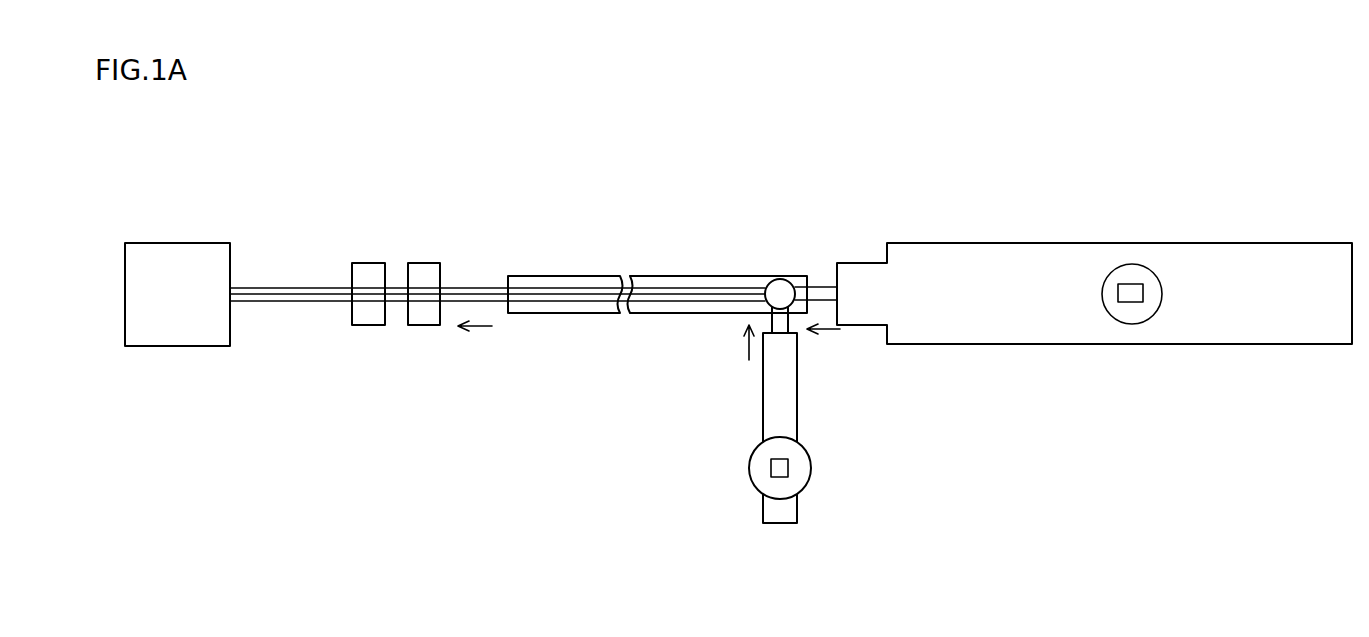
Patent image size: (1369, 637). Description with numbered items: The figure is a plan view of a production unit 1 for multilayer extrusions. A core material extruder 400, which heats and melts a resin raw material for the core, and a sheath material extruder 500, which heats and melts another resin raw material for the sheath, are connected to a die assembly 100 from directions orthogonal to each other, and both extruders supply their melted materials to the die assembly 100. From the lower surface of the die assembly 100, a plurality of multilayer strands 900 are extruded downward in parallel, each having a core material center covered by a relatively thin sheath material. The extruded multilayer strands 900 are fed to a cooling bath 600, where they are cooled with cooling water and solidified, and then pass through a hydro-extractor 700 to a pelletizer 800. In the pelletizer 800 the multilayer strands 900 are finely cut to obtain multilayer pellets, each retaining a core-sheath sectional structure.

The production unit 1 is at (738, 370).
The die assembly 100 is at (780, 286).
The core material extruder 400 is at (1049, 255).
The sheath material extruder 500 is at (759, 468).
The cooling bath 600 is at (557, 283).
The hydro-extractor 700 is at (368, 270).
The pelletizer 800 is at (178, 250).
The multilayer strand 900 is at (290, 303).